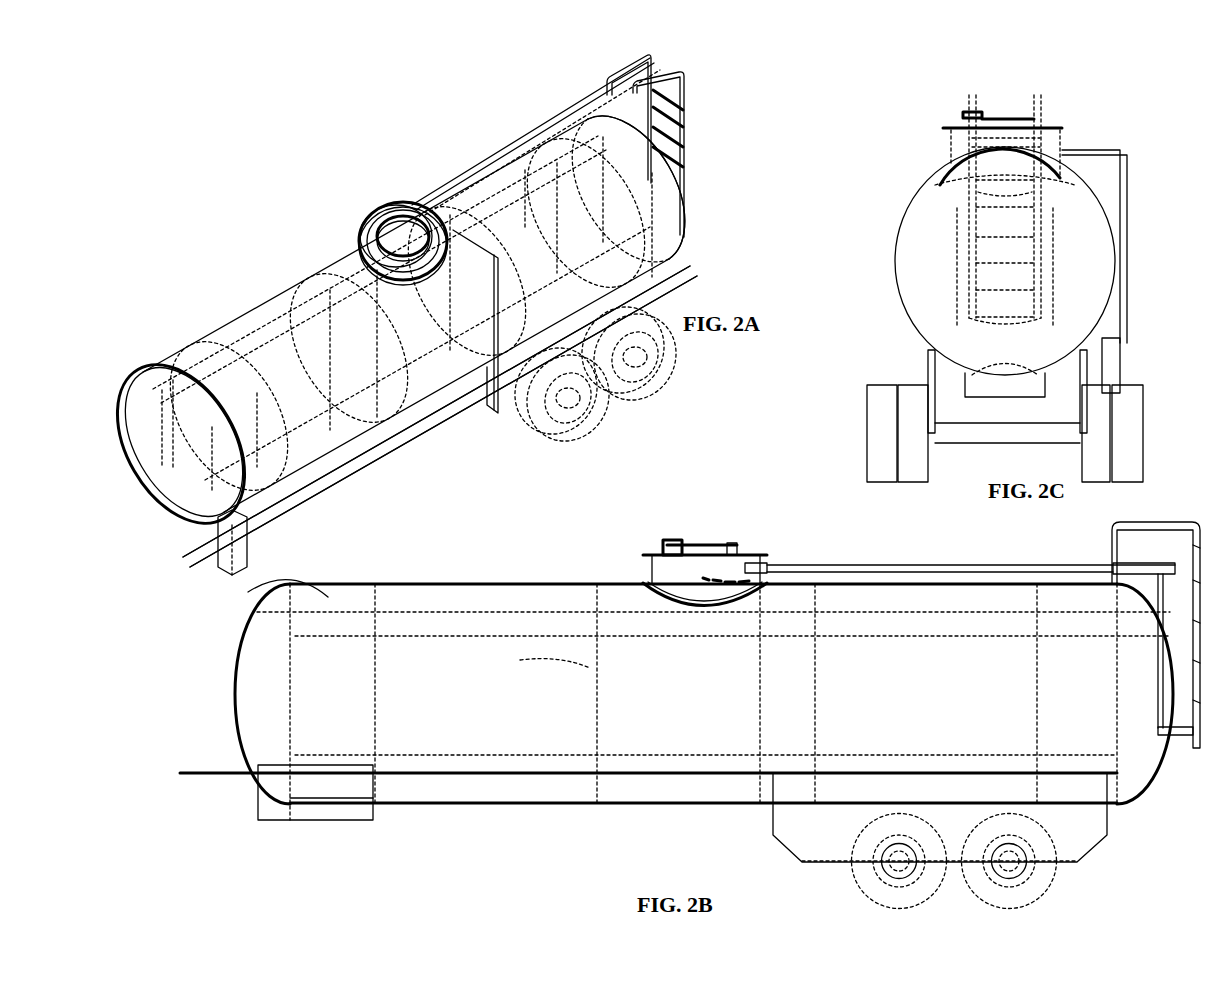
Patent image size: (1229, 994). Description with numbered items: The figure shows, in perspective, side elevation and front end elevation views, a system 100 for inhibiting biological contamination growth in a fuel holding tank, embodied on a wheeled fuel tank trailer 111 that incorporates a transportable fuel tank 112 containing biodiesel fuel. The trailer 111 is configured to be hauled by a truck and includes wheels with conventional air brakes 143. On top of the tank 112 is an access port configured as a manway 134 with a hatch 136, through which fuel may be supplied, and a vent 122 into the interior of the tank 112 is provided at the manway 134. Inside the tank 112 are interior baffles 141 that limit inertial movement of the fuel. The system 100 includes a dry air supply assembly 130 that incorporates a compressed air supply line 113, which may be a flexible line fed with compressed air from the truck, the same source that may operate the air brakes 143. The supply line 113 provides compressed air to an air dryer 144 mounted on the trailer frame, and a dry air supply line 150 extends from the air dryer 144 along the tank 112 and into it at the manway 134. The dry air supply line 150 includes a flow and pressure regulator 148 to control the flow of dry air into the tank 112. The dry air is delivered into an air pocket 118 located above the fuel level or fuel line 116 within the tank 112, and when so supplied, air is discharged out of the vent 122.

In FIG. 2A, the system for inhibiting biological contamination growth 100 is at (357, 163).
In FIG. 2B, the system for inhibiting biological contamination growth 100 is at (797, 540).
In FIG. 2C, the system for inhibiting biological contamination growth 100 is at (1140, 152).
In FIG. 2A, the fuel tank trailer 111 is at (240, 268).
In FIG. 2B, the fuel tank trailer 111 is at (727, 697).
In FIG. 2C, the fuel tank trailer 111 is at (885, 233).
In FIG. 2A, the fuel tank 112 is at (568, 120).
In FIG. 2B, the fuel tank 112 is at (1151, 791).
In FIG. 2A, the compressed air supply line 113 is at (190, 546).
In FIG. 2B, the compressed air supply line 113 is at (195, 771).
In FIG. 2A, the fuel line 116 is at (265, 315).
In FIG. 2B, the fuel line 116 is at (848, 612).
In FIG. 2C, the fuel line 116 is at (958, 183).
In FIG. 2B, the air pocket 118 is at (253, 590).
In FIG. 2C, the air pocket 118 is at (985, 150).
In FIG. 2A, the vent 122 is at (373, 211).
In FIG. 2B, the vent 122 is at (660, 540).
In FIG. 2C, the vent 122 is at (966, 112).
In FIG. 2A, the dry air supply assembly 130 is at (285, 513).
In FIG. 2B, the dry air supply assembly 130 is at (228, 738).
In FIG. 2C, the dry air supply assembly 130 is at (1148, 333).
In FIG. 2A, the manway 134 is at (378, 244).
In FIG. 2B, the manway 134 is at (643, 565).
In FIG. 2C, the manway 134 is at (1060, 136).
In FIG. 2A, the hatch 136 is at (392, 198).
In FIG. 2B, the hatch 136 is at (732, 545).
In FIG. 2C, the hatch 136 is at (1003, 113).
In FIG. 2A, the interior baffles 141 is at (193, 354).
In FIG. 2B, the interior baffles 141 is at (598, 668).
In FIG. 2A, the air brakes 143 is at (595, 374).
In FIG. 2B, the air brakes 143 is at (888, 858).
In FIG. 2A, the air dryer 144 is at (250, 537).
In FIG. 2B, the air dryer 144 is at (270, 810).
In FIG. 2C, the air dryer 144 is at (1115, 358).
In FIG. 2B, the flow and pressure regulator 148 is at (715, 580).
In FIG. 2A, the dry air supply line 150 is at (330, 468).
In FIG. 2B, the dry air supply line 150 is at (421, 770).
In FIG. 2C, the dry air supply line 150 is at (1128, 274).